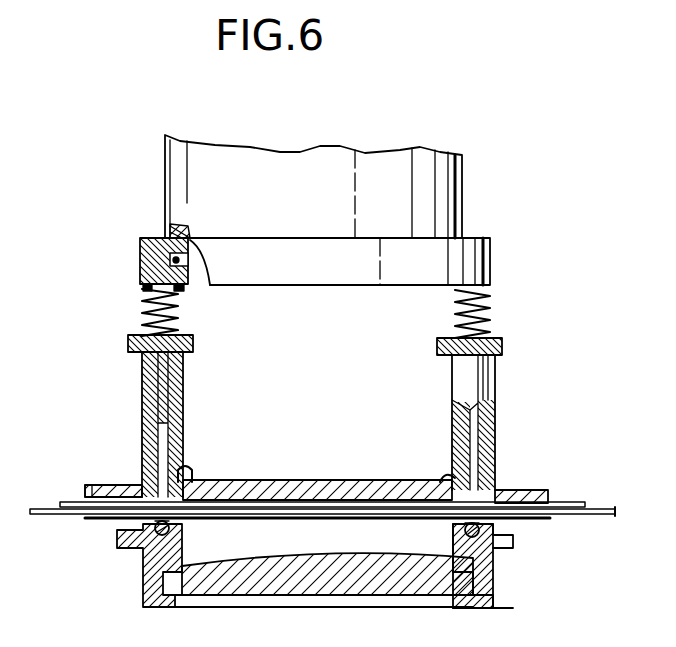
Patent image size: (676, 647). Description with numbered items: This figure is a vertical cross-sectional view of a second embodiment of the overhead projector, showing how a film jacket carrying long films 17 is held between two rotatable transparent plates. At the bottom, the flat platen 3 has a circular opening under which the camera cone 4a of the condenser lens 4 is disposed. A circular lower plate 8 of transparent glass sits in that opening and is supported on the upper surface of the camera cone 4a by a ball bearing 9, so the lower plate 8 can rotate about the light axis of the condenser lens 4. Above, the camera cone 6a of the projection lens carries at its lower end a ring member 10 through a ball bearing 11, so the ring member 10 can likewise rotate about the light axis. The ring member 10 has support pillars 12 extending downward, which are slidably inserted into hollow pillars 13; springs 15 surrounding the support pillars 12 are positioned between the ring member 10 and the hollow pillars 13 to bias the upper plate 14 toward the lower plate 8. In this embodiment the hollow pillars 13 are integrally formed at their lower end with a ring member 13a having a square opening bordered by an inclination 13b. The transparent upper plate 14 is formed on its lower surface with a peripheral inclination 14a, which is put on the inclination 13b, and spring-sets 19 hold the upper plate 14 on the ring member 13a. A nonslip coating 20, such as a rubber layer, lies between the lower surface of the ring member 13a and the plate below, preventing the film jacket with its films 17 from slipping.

The camera cone 6a is at (165, 181).
The ball bearing 11 is at (170, 233).
The ring member 10 is at (150, 262).
The springs 15 is at (143, 297).
The support pillars 12 is at (180, 333).
The hollow pillars 13 is at (142, 384).
The spring-sets 19 is at (190, 462).
The inclination 14a is at (196, 478).
The upper plate 14 is at (287, 480).
The inclination 13b is at (440, 480).
The ring member 13a is at (510, 478).
The long films 17 is at (578, 490).
The platen 3 is at (605, 508).
The nonslip coating 20 is at (90, 486).
The lower plate 8 is at (140, 512).
The ball bearing 9 is at (480, 529).
The camera cone 4a is at (488, 572).
The condenser lens 4 is at (485, 600).